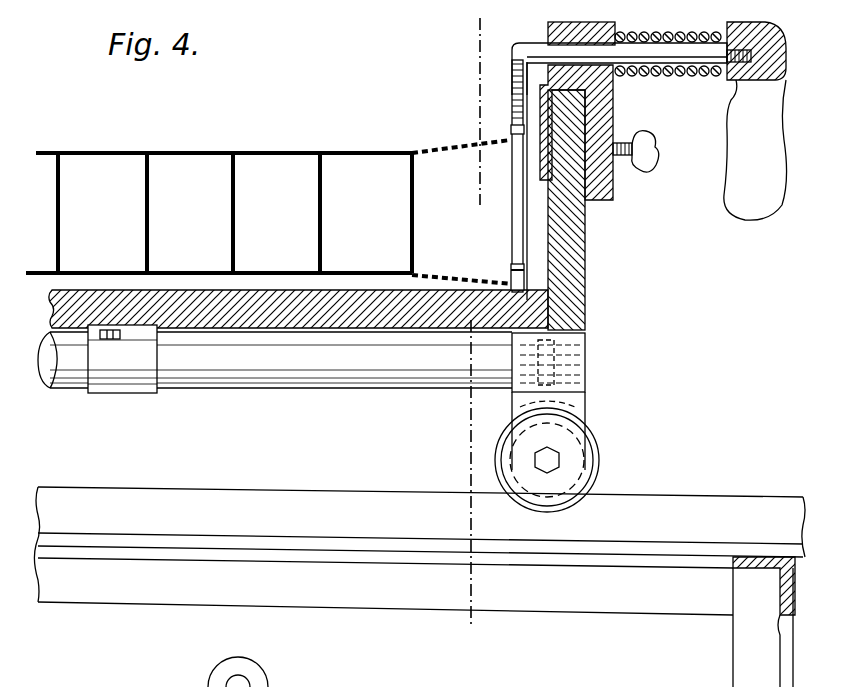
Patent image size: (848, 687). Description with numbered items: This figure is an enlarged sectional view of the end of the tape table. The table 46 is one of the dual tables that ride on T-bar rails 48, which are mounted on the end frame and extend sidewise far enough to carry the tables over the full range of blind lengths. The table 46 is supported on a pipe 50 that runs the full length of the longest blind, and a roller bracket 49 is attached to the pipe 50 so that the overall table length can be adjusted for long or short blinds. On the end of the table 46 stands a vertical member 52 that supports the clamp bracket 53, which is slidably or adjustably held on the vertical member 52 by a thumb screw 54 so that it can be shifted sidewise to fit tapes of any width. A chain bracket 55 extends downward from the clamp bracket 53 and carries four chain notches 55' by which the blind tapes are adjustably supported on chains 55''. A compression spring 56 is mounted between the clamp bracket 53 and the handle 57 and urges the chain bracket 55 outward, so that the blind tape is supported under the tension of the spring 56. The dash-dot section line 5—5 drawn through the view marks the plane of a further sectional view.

The section line 5- 5 is at (477, 37).
The table 46 is at (283, 287).
The T-bar rail 48 is at (318, 488).
The roller bracket 49 is at (587, 418).
The pipe 50 is at (228, 392).
The vertical member 52 is at (587, 287).
The clamp bracket 53 is at (615, 110).
The thumb screw 54 is at (657, 140).
The chain bracket 55 is at (603, 171).
The chain notch 55' is at (503, 197).
The chain 55'' is at (462, 201).
The compression spring 56 is at (716, 30).
The handle 57 is at (735, 222).